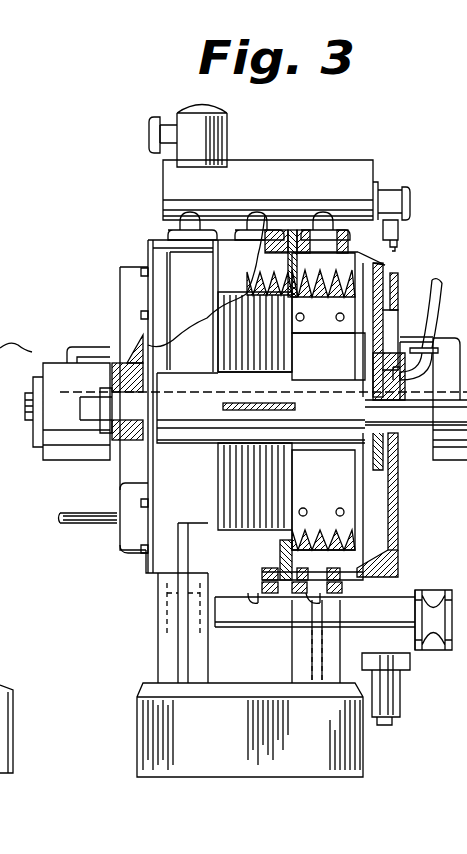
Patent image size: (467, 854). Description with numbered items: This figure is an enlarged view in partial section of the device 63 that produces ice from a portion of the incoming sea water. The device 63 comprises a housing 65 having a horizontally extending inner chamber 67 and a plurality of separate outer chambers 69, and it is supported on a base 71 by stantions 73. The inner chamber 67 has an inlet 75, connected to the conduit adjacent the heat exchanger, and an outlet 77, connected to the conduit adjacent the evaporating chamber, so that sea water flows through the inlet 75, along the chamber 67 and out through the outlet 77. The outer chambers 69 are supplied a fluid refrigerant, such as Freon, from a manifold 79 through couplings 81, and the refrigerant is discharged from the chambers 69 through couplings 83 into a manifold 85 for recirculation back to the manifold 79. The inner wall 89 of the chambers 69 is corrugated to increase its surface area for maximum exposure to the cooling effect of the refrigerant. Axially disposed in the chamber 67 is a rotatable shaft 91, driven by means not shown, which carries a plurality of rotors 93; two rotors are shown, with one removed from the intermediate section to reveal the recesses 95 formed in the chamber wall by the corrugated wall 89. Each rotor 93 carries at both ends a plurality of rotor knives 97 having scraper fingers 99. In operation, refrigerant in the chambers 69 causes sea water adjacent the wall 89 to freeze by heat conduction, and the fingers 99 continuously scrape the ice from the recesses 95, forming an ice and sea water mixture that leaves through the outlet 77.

The device 63 is at (351, 154).
The housing 65 is at (396, 283).
The inner chamber 67 is at (267, 368).
The outer chambers 69 is at (298, 228).
The base 71 is at (162, 735).
The stantions 73 is at (172, 647).
The inlet 75 is at (435, 308).
The outlet 77 is at (87, 518).
The manifold 79 is at (231, 165).
The couplings 81 is at (190, 227).
The couplings 83 is at (252, 597).
The manifold 85 is at (400, 632).
The inner wall 89 is at (380, 256).
The rotatable shaft 91 is at (387, 412).
The rotors 93 is at (160, 347).
The recesses 95 is at (250, 295).
The rotor knives 97 is at (397, 270).
The scraper fingers 99 is at (326, 300).